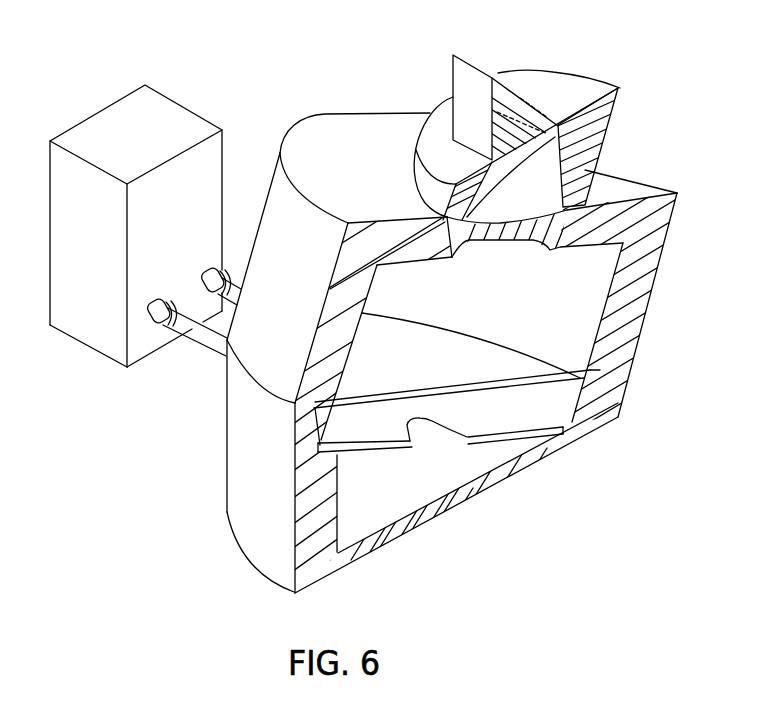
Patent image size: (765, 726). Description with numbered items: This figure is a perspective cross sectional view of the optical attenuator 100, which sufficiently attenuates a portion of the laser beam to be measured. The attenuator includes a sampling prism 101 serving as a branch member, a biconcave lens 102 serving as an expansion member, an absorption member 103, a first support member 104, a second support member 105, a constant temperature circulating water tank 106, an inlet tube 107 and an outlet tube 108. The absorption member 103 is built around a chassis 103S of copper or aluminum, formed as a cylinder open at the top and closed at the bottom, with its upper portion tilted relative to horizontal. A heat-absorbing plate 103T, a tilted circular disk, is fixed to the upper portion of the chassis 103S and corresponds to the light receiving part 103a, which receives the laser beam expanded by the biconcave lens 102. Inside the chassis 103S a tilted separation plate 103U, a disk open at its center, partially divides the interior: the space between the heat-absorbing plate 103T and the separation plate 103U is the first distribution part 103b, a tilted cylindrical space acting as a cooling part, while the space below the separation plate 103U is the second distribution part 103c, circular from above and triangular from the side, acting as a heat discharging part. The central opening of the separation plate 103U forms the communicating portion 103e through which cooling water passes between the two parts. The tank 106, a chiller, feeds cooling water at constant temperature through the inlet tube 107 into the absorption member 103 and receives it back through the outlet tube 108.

The optical attenuator 100 is at (77, 53).
The sampling prism 101 is at (590, 105).
The biconcave lens 102 is at (625, 243).
The absorption member 103 is at (615, 390).
The chassis 103S is at (604, 405).
The light receiving part 103a is at (543, 385).
The first distribution part 103b is at (488, 408).
The second distribution part 103c is at (407, 478).
The communicating portion 103e is at (448, 430).
The heat-absorbing plate 103T is at (348, 462).
The separation plate 103U is at (392, 455).
The first support member 104 is at (640, 298).
The second support member 105 is at (590, 142).
The constant temperature circulating water tank 106 is at (83, 323).
The inlet tube 107 is at (173, 322).
The outlet tube 108 is at (217, 303).